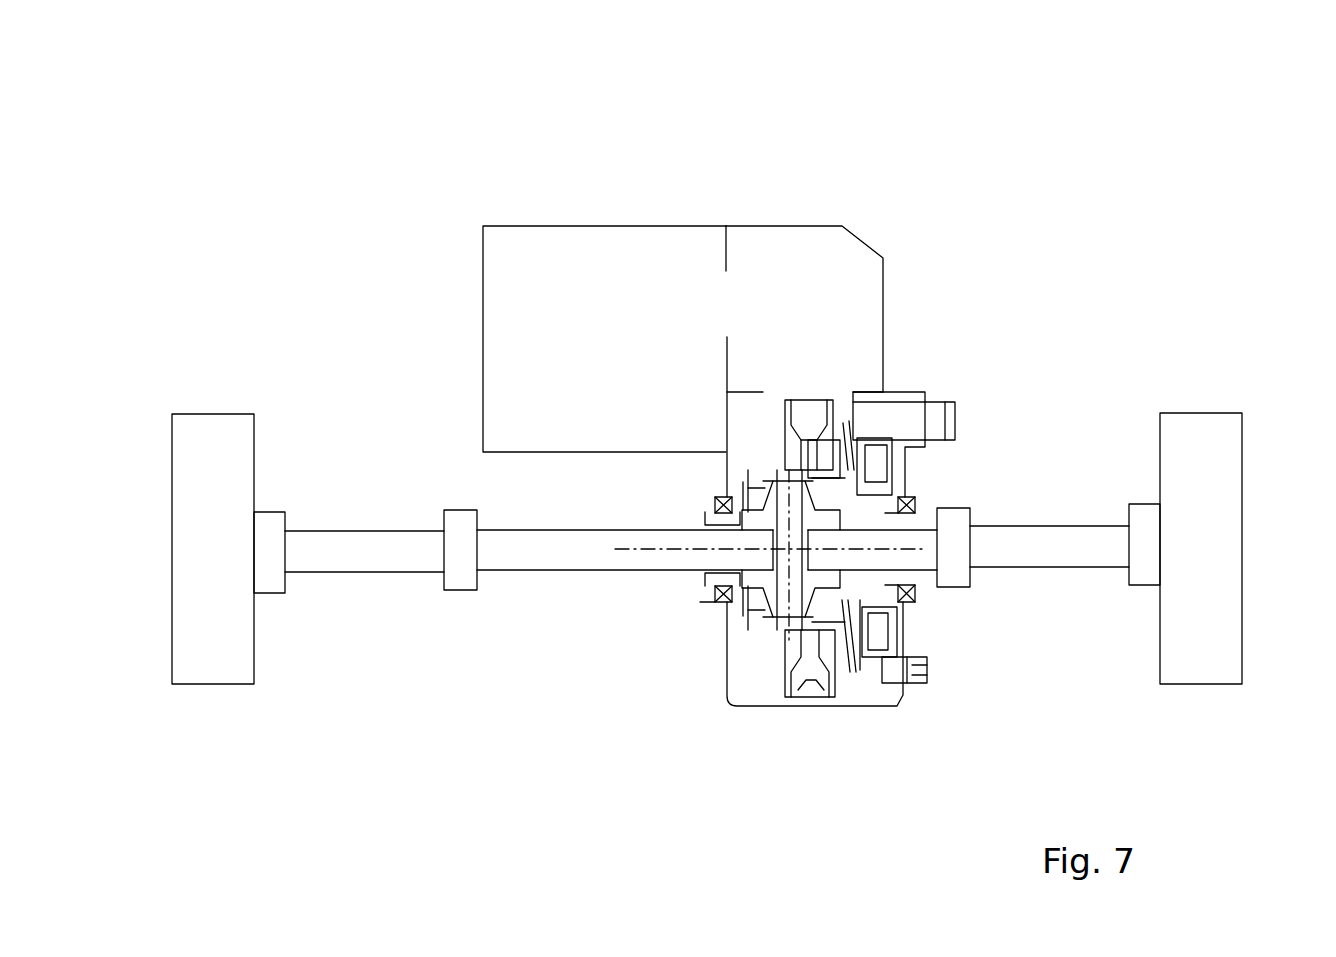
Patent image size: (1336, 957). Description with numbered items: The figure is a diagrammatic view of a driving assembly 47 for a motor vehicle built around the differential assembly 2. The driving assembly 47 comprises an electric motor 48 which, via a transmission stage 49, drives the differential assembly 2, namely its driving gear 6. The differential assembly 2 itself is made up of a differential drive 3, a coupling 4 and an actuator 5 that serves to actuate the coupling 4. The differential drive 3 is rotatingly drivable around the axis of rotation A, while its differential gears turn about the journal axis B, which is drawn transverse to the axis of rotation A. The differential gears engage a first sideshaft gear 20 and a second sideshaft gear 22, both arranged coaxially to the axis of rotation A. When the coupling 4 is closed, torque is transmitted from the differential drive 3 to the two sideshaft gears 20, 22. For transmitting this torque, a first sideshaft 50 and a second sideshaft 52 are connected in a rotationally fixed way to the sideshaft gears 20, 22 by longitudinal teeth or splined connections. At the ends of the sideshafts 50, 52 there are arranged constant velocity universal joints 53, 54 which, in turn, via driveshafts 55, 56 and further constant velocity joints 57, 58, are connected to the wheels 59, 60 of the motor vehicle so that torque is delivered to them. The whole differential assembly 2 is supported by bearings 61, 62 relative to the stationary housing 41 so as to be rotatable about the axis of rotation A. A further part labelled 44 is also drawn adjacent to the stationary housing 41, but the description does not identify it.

The differential assembly 2 is at (838, 392).
The differential drive 3 is at (768, 482).
The coupling 4 is at (816, 461).
The actuator 5 is at (900, 453).
The driving gear 6 is at (806, 408).
The first sideshaft gear 20 is at (757, 592).
The second sideshaft gear 22 is at (825, 598).
The stationary housing 41 is at (912, 389).
The connector 44 is at (923, 418).
The driving assembly 47 is at (669, 138).
The electric motor 48 is at (535, 246).
The transmission stage 49 is at (835, 243).
The sideshaft 50 is at (608, 568).
The sideshaft 52 is at (870, 558).
The constant velocity universal joint 53 is at (453, 588).
The constant velocity universal joint 54 is at (955, 592).
The driveshaft 55 is at (358, 565).
The driveshaft 56 is at (1048, 568).
The constant velocity joint 57 is at (275, 588).
The constant velocity joint 58 is at (1140, 578).
The wheel 59 is at (223, 678).
The wheel 60 is at (1243, 625).
The bearing 61 is at (715, 497).
The bearing 62 is at (900, 490).
The axis of rotation A is at (630, 550).
The journal axis B is at (787, 637).